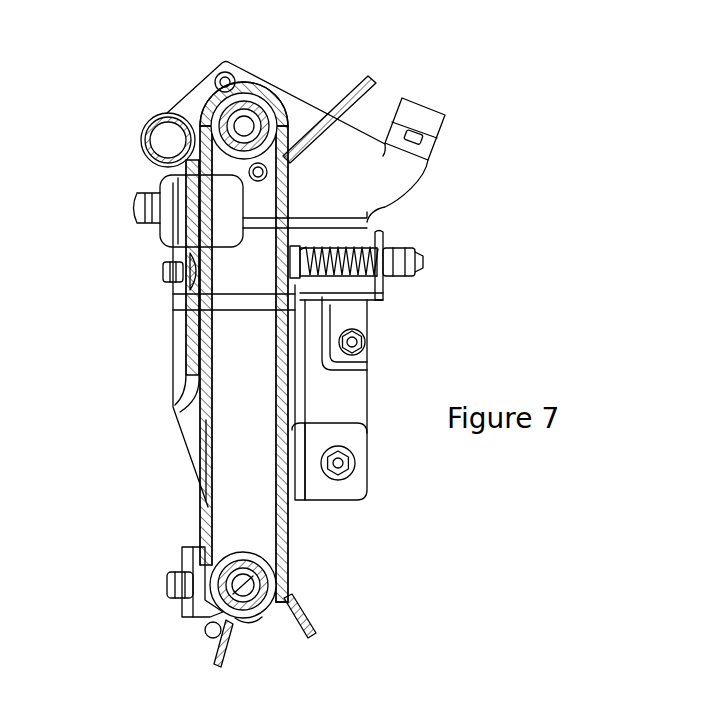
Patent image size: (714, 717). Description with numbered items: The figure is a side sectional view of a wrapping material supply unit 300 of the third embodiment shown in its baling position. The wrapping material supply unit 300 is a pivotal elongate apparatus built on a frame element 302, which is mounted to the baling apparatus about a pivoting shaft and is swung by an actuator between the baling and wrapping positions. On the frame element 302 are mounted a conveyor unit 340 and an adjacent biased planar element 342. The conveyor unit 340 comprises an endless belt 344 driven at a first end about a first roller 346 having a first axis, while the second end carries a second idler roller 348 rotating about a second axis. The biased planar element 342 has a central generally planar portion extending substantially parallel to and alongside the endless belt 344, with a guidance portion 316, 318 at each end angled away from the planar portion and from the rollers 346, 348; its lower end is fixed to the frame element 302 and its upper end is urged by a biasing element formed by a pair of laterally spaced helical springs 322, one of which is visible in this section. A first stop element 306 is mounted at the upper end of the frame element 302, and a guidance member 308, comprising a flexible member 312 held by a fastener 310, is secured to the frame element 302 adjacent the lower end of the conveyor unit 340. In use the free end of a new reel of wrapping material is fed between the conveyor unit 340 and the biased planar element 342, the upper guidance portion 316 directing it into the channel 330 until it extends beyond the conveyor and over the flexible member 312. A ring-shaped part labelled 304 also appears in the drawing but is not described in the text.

The wrapping material supply unit 300 is at (512, 170).
The frame element 302 is at (181, 355).
The mounting ring 304 is at (142, 131).
The first stop element 306 is at (445, 120).
The guidance member 308 is at (192, 625).
The fastener 310 is at (176, 584).
The flexible member 312 is at (215, 650).
The upper guidance portion 316 is at (376, 88).
The lower guidance portion 318 is at (313, 628).
The helical spring 322 is at (372, 240).
The channel 330 is at (283, 608).
The conveyor unit 340 is at (191, 420).
The biased planar element 342 is at (300, 552).
The endless belt 344 is at (206, 460).
The first roller 346 is at (268, 93).
The second idler roller 348 is at (262, 588).